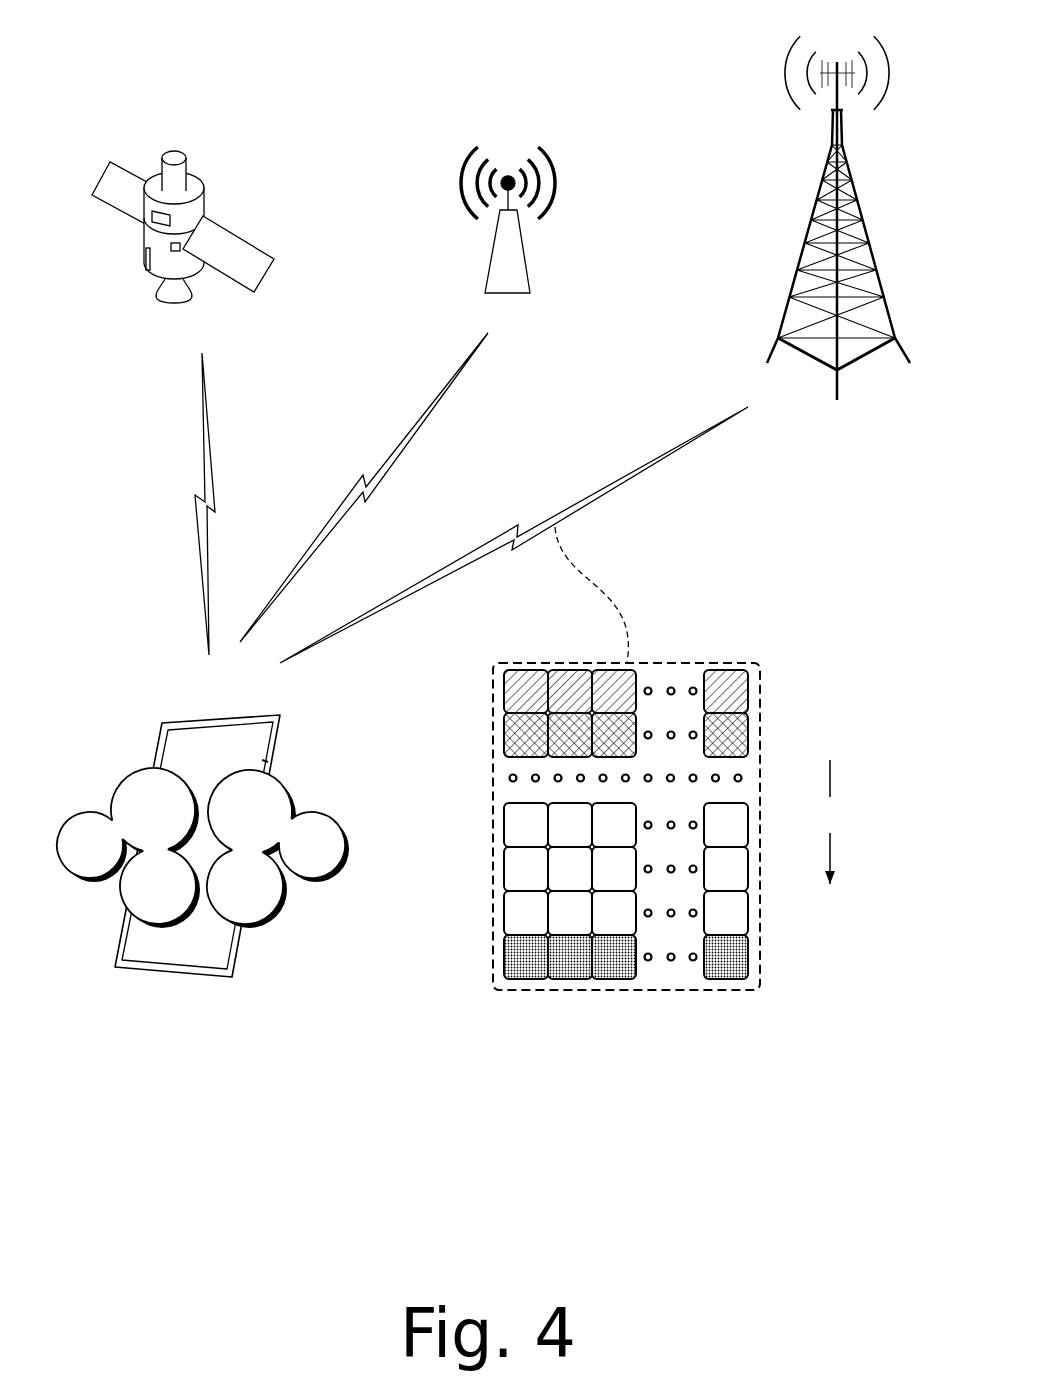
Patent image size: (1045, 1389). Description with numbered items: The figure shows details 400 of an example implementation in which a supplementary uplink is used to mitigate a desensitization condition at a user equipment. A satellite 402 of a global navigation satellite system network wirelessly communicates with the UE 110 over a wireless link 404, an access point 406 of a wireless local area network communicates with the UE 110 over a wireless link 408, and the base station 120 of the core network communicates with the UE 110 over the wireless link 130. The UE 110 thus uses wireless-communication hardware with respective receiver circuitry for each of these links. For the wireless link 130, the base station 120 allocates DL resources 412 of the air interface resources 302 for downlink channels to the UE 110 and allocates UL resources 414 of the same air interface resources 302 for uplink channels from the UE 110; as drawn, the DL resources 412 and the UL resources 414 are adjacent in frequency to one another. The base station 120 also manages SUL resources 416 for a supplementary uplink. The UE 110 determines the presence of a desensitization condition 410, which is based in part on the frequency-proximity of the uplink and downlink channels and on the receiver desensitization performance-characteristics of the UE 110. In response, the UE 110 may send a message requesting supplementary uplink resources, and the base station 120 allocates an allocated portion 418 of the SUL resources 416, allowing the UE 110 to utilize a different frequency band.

The details 400 is at (172, 42).
The satellite 402 is at (212, 172).
The wireless link 404 is at (201, 458).
The access point 406 is at (570, 175).
The wireless link 408 is at (381, 461).
The base station 120 is at (802, 237).
The wireless link 130 is at (609, 504).
The UE 110 is at (188, 1013).
The desensitization condition 410 is at (182, 884).
The air interface resources 302 is at (709, 857).
The DL resources 412 is at (782, 672).
The UL resources 414 is at (782, 716).
The SUL resources 416 is at (714, 892).
The allocated portion 418 is at (782, 935).